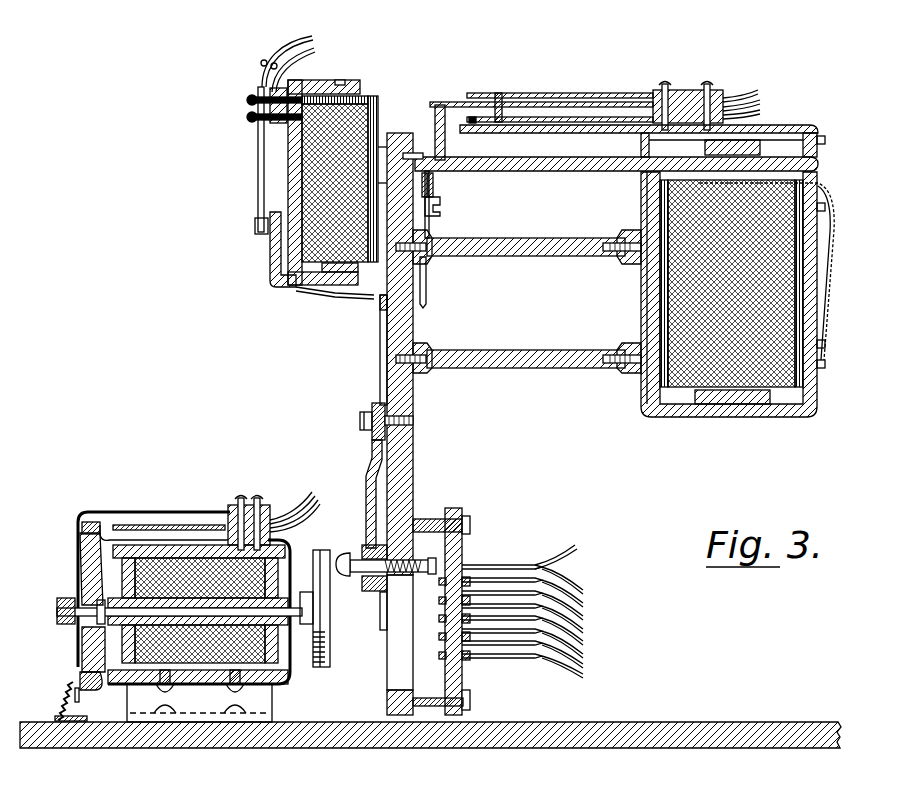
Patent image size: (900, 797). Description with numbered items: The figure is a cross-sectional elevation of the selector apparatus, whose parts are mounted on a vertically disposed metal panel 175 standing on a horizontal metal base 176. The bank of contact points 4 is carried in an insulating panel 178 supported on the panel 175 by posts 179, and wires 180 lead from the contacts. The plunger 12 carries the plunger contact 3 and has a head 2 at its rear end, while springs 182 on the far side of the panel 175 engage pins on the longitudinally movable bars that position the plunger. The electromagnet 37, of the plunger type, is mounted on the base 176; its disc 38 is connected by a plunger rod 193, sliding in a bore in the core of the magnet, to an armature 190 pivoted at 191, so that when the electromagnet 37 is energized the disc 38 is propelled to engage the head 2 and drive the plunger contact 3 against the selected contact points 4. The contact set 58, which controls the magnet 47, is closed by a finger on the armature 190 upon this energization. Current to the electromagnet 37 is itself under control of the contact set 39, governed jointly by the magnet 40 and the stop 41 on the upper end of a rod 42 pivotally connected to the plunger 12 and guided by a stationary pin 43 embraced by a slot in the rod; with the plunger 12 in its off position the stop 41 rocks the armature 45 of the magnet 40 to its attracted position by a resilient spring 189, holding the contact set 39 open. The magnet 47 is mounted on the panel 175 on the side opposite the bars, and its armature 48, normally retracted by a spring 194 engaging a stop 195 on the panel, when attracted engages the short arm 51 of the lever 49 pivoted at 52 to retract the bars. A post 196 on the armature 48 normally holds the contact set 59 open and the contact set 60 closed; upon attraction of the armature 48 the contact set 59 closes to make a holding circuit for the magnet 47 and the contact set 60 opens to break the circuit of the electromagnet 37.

The head 2 is at (344, 554).
The plunger contact 3 is at (437, 569).
The contact points 4 is at (443, 623).
The plunger 12 is at (352, 577).
The electromagnet 37 is at (286, 678).
The disc 38 is at (322, 668).
The contact set 39 is at (258, 239).
The magnet 40 is at (376, 122).
The stop 41 is at (378, 305).
The rod 42 is at (390, 381).
The stationary pin 43 is at (362, 421).
The armature 45 is at (318, 292).
The magnet 47 is at (770, 300).
The armature 48 is at (562, 164).
The lever 49 is at (427, 296).
The short arm 51 is at (434, 188).
The pivot 52 is at (441, 206).
The contact set 58 is at (149, 525).
The contact set 59 is at (518, 101).
The contact set 60 is at (466, 95).
The panel 175 is at (412, 453).
The base 176 is at (642, 722).
The insulating panel 178 is at (463, 553).
The posts 179 is at (428, 518).
The wires 180 is at (556, 546).
The springs 182 is at (62, 705).
The resilient spring 189 is at (337, 298).
The armature 190 is at (80, 586).
The pivot 191 is at (93, 690).
The plunger rod 193 is at (81, 548).
The spring 194 is at (833, 214).
The stop 195 is at (420, 152).
The post 196 is at (445, 149).